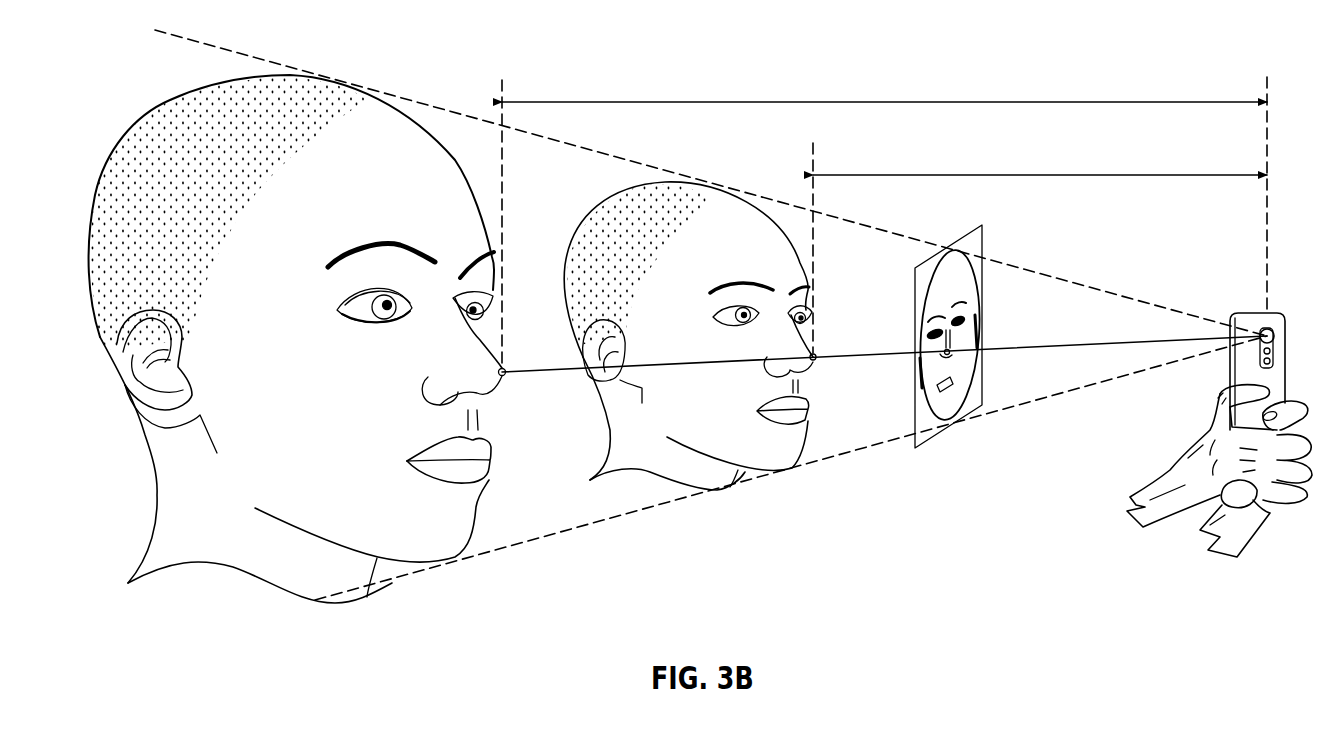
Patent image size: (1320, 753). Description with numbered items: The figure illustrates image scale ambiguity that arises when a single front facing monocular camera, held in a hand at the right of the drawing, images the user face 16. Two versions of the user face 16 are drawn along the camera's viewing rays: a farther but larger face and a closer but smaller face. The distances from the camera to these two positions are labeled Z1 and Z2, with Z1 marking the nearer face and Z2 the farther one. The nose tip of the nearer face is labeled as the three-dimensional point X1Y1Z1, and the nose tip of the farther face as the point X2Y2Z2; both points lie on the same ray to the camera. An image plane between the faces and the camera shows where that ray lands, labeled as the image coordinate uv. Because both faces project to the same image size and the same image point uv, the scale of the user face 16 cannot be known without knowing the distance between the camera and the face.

The user face 16 is at (117, 166).
The distance Z1 from camera to first head position Z1 is at (1040, 175).
The distance Z2 from camera to second head position Z2 is at (883, 102).
The 3D nose-tip point at first position X1Y1Z1 is at (813, 360).
The 3D nose-tip point at second position X2Y2Z2 is at (502, 375).
The image-plane projection of nose tip uv is at (957, 388).